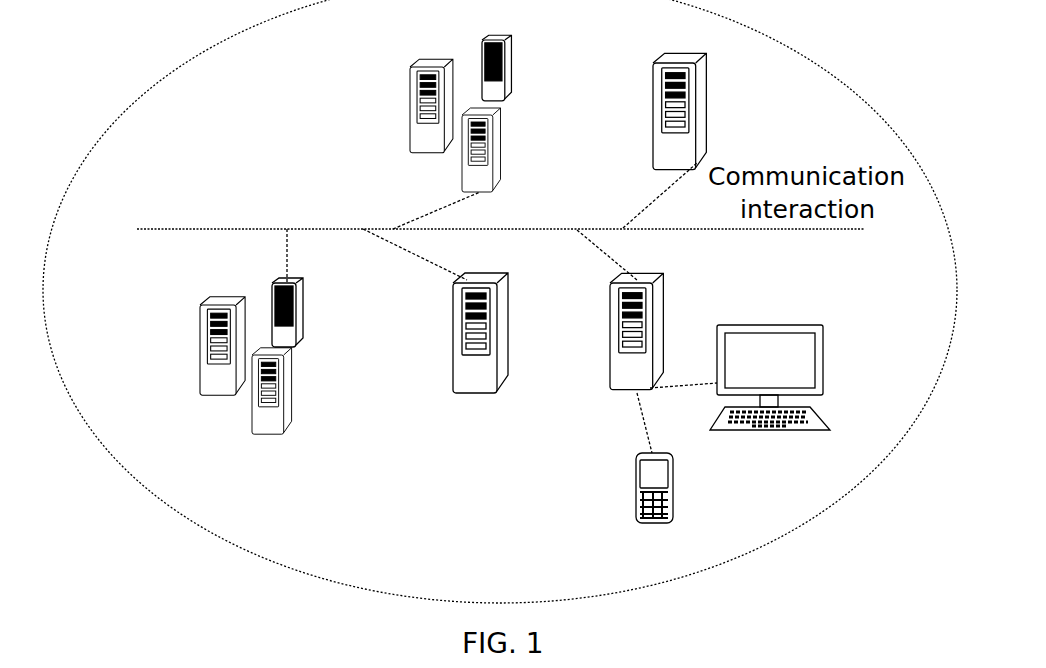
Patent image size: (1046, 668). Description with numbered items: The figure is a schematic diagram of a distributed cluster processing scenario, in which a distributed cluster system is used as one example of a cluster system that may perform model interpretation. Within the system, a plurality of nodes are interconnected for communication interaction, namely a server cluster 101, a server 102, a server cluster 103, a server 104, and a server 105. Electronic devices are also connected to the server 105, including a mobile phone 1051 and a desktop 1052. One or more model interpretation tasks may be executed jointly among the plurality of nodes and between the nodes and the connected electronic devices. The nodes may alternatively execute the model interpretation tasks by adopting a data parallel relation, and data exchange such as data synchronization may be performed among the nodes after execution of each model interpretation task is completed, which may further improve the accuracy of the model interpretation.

The server cluster 101 is at (505, 37).
The server 102 is at (692, 132).
The server cluster 103 is at (303, 310).
The server 104 is at (492, 272).
The server 105 is at (665, 273).
The mobile phone 1051 is at (675, 468).
The desktop 1052 is at (800, 347).